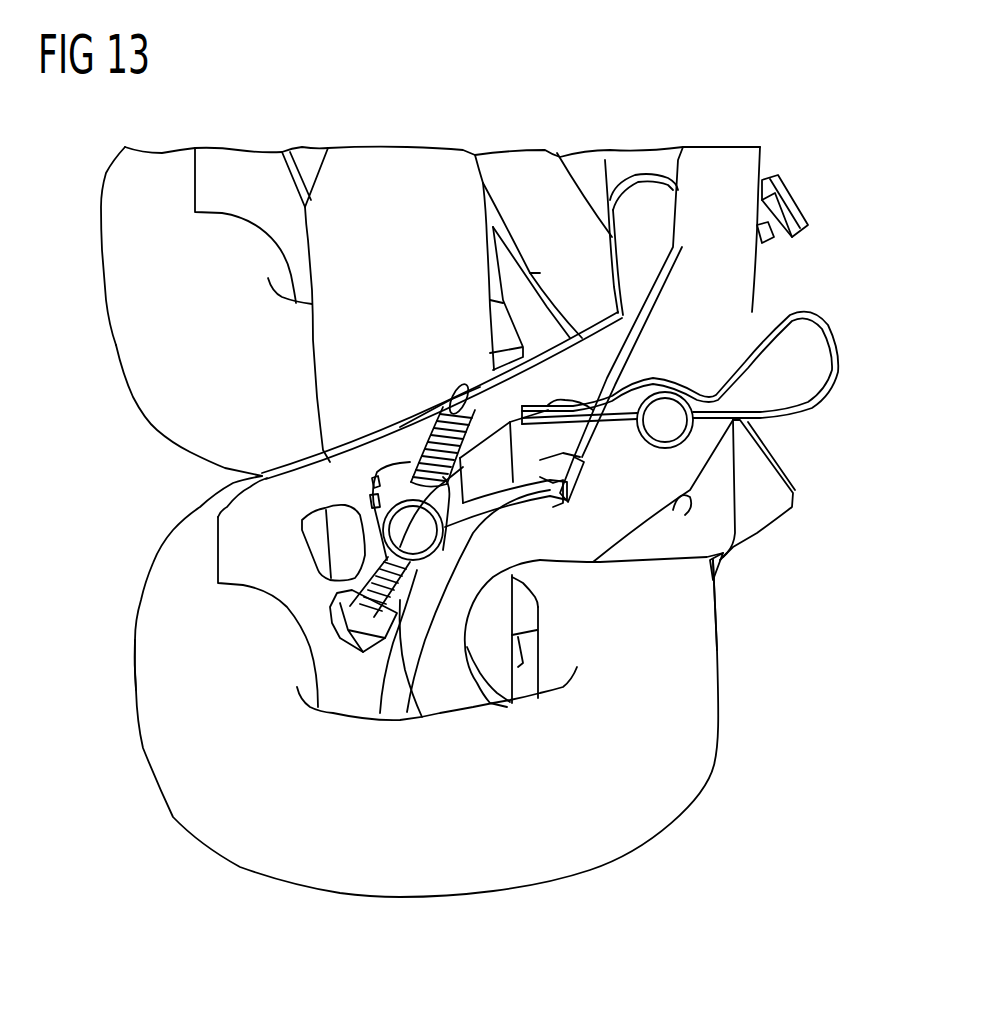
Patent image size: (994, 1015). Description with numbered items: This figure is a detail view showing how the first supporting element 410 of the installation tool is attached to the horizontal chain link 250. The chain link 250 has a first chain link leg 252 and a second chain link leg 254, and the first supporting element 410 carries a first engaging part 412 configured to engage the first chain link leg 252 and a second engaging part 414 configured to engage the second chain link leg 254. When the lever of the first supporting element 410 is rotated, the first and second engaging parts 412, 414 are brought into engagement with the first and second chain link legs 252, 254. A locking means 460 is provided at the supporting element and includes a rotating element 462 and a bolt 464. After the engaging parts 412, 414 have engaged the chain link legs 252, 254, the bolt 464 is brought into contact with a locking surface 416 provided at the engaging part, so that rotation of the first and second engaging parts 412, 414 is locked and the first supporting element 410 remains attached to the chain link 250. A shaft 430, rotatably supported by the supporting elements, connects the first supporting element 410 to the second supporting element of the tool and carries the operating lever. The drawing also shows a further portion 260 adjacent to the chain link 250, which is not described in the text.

The horizontal chain link 250 is at (122, 355).
The first chain link leg 252 is at (670, 637).
The second chain link leg 254 is at (157, 593).
The post 260 is at (313, 373).
The first supporting element 410 is at (735, 272).
The first engaging part 412 is at (563, 560).
The second engaging part 414 is at (245, 570).
The locking surface 416 is at (580, 487).
The shaft 430 is at (628, 253).
The locking means 460 is at (367, 482).
The rotating element 462 is at (415, 540).
The bolt 464 is at (433, 443).